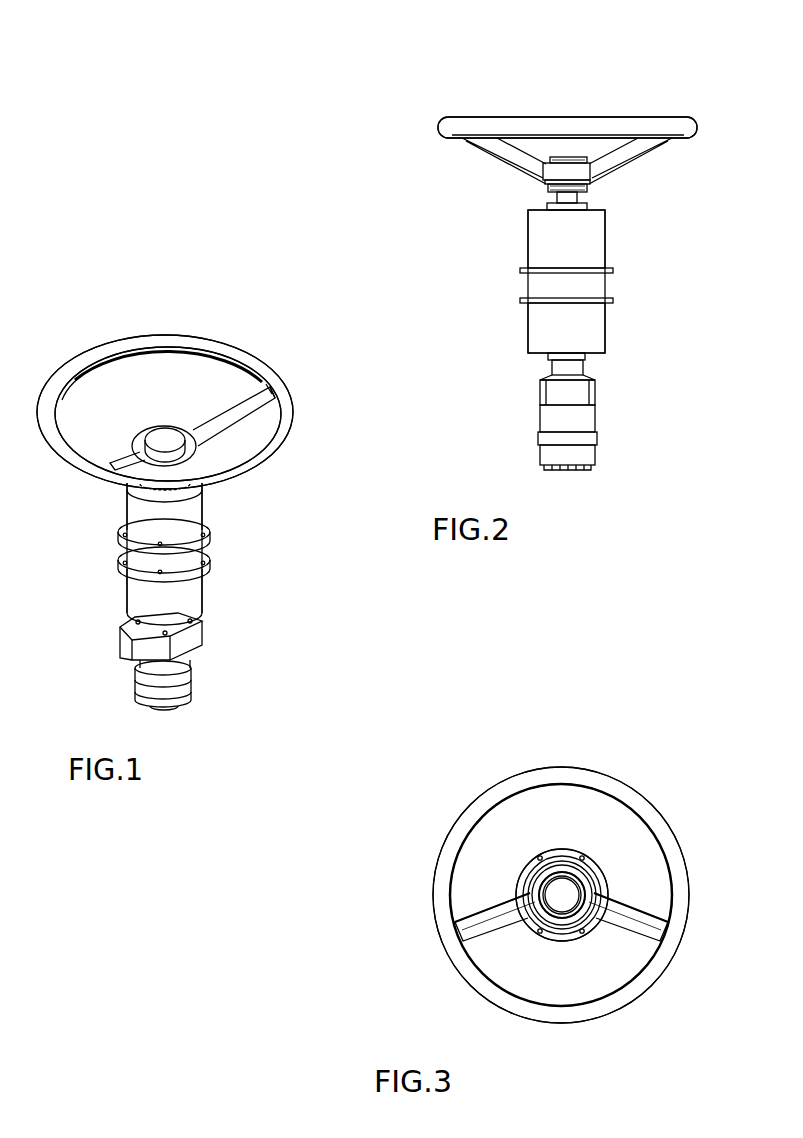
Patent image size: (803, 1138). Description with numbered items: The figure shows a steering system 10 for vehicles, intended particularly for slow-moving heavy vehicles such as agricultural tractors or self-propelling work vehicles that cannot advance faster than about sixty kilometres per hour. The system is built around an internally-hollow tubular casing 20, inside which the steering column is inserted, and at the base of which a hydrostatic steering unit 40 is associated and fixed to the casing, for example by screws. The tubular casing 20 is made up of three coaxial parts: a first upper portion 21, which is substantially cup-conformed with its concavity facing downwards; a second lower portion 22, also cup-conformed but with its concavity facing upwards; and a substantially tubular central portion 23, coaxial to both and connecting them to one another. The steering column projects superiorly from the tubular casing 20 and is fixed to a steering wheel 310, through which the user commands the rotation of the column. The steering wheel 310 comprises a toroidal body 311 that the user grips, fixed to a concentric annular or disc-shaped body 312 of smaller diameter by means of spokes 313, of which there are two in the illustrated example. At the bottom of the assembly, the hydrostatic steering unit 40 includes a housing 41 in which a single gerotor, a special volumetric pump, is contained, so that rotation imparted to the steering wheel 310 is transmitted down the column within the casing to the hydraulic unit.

In FIG. 1, the steering system 10 is at (103, 317).
In FIG. 2, the steering system 10 is at (397, 110).
In FIG. 3, the steering system 10 is at (448, 765).
In FIG. 1, the tubular casing 20 is at (210, 523).
In FIG. 2, the tubular casing 20 is at (612, 254).
In FIG. 3, the tubular casing 20 is at (605, 875).
In FIG. 1, the first upper portion 21 is at (190, 505).
In FIG. 2, the first upper portion 21 is at (590, 233).
In FIG. 1, the second lower portion 22 is at (198, 593).
In FIG. 2, the second lower portion 22 is at (590, 321).
In FIG. 1, the central portion 23 is at (208, 552).
In FIG. 2, the central portion 23 is at (606, 290).
In FIG. 1, the hydrostatic steering unit 40 is at (200, 683).
In FIG. 2, the hydrostatic steering unit 40 is at (598, 421).
In FIG. 1, the housing 41 is at (192, 655).
In FIG. 2, the housing 41 is at (580, 395).
In FIG. 1, the steering wheel 310 is at (270, 365).
In FIG. 2, the steering wheel 310 is at (633, 115).
In FIG. 3, the steering wheel 310 is at (652, 798).
In FIG. 1, the toroidal body 311 is at (163, 348).
In FIG. 2, the toroidal body 311 is at (528, 115).
In FIG. 3, the toroidal body 311 is at (590, 783).
In FIG. 1, the disc-shaped body 312 is at (167, 428).
In FIG. 2, the disc-shaped body 312 is at (550, 173).
In FIG. 3, the disc-shaped body 312 is at (530, 925).
In FIG. 1, the spokes 313 is at (290, 403).
In FIG. 2, the spokes 313 is at (520, 152).
In FIG. 3, the spokes 313 is at (613, 912).